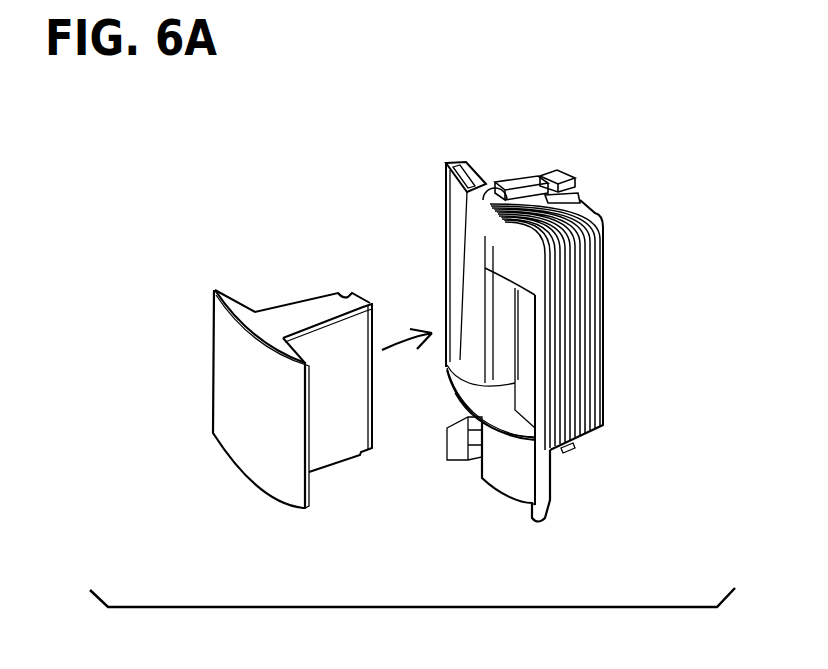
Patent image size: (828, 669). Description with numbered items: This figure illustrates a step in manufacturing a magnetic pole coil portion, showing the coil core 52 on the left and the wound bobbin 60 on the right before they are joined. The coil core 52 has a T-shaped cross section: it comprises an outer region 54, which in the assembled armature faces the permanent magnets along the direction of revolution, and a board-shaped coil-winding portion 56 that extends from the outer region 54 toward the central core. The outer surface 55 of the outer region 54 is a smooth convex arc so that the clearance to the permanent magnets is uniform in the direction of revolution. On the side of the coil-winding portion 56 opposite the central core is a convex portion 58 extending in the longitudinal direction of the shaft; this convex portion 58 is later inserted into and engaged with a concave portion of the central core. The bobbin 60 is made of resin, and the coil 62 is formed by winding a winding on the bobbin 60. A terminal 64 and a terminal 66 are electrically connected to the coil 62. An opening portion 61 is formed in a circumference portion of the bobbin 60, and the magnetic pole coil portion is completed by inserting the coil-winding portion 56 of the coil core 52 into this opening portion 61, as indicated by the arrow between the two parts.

The coil core 52 is at (244, 345).
The outer region 54 is at (248, 322).
The outer surface 55 is at (242, 408).
The coil-winding portion 56 is at (298, 310).
The convex portion 58 is at (353, 290).
The bobbin 60 is at (534, 329).
The opening portion 61 is at (503, 408).
The coil 62 is at (580, 332).
The terminal 64 is at (521, 178).
The terminal 66 is at (468, 440).